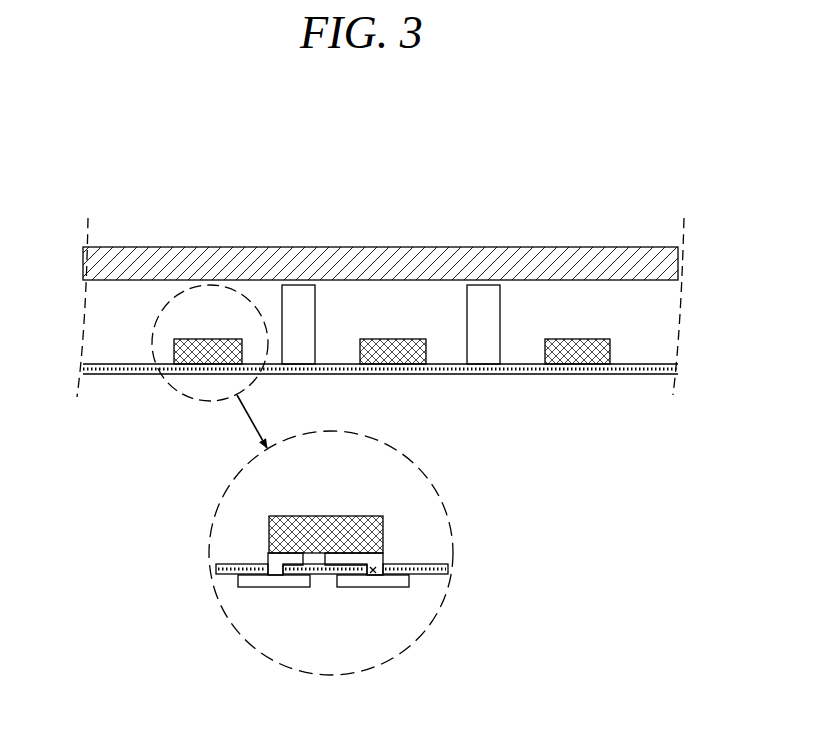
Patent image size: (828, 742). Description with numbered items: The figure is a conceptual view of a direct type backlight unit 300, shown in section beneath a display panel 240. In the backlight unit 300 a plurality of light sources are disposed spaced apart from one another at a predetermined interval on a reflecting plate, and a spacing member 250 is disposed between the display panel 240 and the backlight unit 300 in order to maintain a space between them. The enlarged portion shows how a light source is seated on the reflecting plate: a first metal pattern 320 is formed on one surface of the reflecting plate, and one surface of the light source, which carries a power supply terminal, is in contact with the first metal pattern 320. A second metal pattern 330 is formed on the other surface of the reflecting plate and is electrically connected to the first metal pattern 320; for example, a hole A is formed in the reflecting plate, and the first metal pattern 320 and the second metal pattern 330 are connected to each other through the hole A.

The display panel 240 is at (210, 258).
The spacing member 250 is at (487, 295).
The backlight unit 300 is at (214, 504).
The first metal pattern 320 is at (352, 560).
The second metal pattern 330 is at (373, 582).
The hole A is at (375, 569).